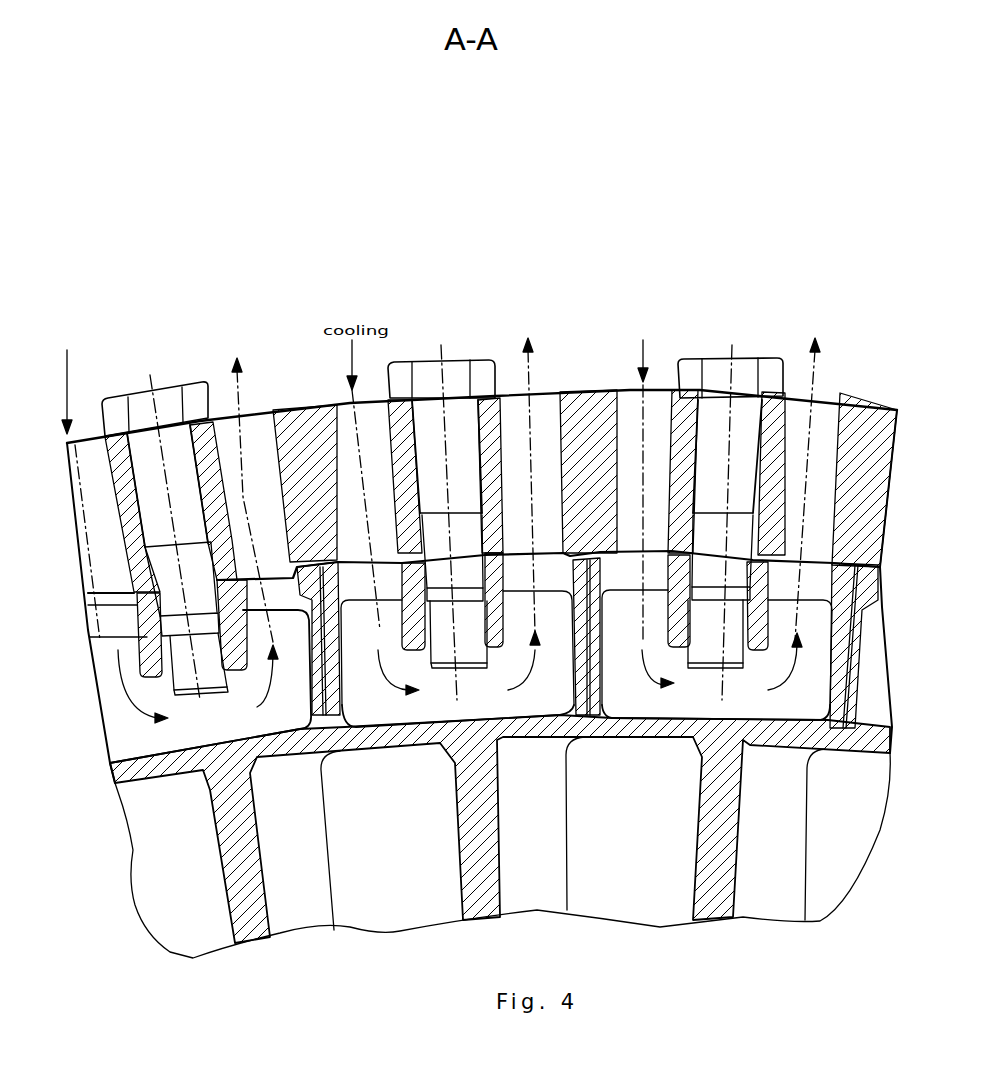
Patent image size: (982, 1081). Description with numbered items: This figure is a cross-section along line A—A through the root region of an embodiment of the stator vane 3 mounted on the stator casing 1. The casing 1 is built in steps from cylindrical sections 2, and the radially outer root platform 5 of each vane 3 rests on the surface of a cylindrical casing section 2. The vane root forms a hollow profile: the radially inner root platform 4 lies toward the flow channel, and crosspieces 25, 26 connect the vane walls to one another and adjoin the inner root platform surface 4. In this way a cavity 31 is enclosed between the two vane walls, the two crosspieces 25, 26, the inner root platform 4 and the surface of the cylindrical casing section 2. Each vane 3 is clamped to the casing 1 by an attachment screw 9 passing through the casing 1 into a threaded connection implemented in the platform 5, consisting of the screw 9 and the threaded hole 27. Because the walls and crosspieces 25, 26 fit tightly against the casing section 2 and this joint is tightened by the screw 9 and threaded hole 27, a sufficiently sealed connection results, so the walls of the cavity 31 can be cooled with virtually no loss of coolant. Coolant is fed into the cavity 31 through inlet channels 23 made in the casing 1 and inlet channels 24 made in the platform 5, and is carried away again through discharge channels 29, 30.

The stator casing 1 is at (812, 186).
The cylindrical casing section 2 is at (764, 186).
The stator vane 3 is at (584, 186).
The inner root platform 4 is at (198, 186).
The outer root platform 5 is at (248, 186).
The attachment screw 9 is at (460, 186).
The inlet channel 23 is at (425, 186).
The inlet channel 24 is at (300, 186).
The crosspiece 25 is at (110, 186).
The crosspiece 26 is at (733, 186).
The threaded hole 27 is at (548, 186).
The discharge channel 29 is at (658, 186).
The discharge channel 30 is at (620, 186).
The cavity 31 is at (695, 186).